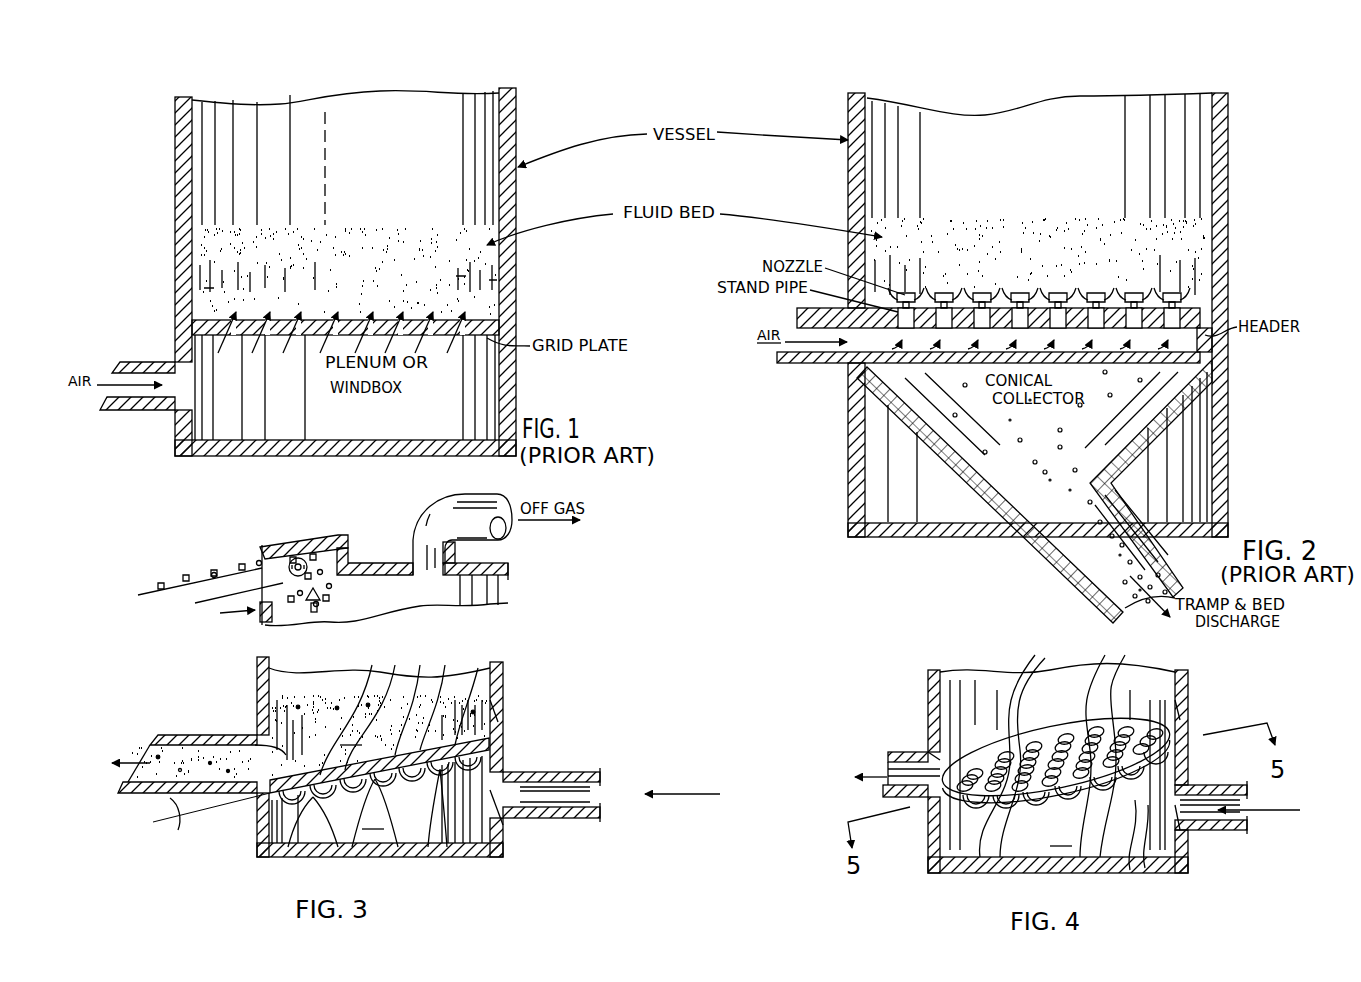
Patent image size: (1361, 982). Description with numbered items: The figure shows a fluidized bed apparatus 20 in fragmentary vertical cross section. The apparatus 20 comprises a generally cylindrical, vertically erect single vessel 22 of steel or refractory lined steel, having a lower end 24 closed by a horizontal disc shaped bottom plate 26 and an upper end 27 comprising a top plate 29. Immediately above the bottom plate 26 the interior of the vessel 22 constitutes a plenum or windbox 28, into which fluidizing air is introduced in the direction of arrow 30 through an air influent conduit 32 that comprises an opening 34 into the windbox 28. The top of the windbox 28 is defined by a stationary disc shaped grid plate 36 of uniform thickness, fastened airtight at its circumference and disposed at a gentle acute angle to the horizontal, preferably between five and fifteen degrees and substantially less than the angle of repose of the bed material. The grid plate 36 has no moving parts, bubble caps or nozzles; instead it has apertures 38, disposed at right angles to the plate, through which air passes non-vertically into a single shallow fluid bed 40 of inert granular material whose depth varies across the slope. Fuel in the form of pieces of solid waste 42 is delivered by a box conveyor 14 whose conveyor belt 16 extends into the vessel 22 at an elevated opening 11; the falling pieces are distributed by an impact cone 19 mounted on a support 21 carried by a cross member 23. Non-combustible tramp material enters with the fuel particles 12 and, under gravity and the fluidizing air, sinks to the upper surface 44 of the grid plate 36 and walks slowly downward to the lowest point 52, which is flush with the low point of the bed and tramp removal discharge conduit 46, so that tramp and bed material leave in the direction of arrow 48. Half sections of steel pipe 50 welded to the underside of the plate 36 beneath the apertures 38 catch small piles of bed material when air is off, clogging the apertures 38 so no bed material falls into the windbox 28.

In FIG. 3, the elevated opening 11 is at (262, 560).
In FIG. 3, the fuel particles 12 is at (243, 566).
In FIG. 3, the box conveyor 14 is at (308, 554).
In FIG. 3, the conveyor belt 16 is at (152, 592).
In FIG. 3, the impact cone 19 is at (322, 594).
In FIG. 3, the fluidized bed apparatus 20 is at (245, 652).
In FIG. 4, the fluidized bed apparatus 20 is at (977, 661).
In FIG. 3, the support 21 is at (330, 601).
In FIG. 3, the vessel 22 is at (503, 668).
In FIG. 4, the vessel 22 is at (1188, 683).
In FIG. 3, the cross member 23 is at (318, 610).
In FIG. 3, the lower end 24 is at (257, 838).
In FIG. 4, the lower end 24 is at (928, 855).
In FIG. 3, the bottom plate 26 is at (366, 857).
In FIG. 4, the bottom plate 26 is at (1042, 873).
In FIG. 3, the upper end 27 is at (508, 578).
In FIG. 3, the plenum or windbox 28 is at (377, 771).
In FIG. 4, the plenum or windbox 28 is at (1057, 765).
In FIG. 3, the top plate 29 is at (355, 571).
In FIG. 3, the arrow 30 is at (690, 793).
In FIG. 4, the arrow 30 is at (1250, 812).
In FIG. 3, the air influent conduit 32 is at (518, 778).
In FIG. 4, the air influent conduit 32 is at (1200, 786).
In FIG. 3, the opening 34 is at (502, 825).
In FIG. 4, the opening 34 is at (1148, 865).
In FIG. 3, the grid plate 36 is at (257, 798).
In FIG. 4, the grid plate 36 is at (1170, 748).
In FIG. 3, the apertures 38 is at (370, 676).
In FIG. 4, the apertures 38 is at (1035, 672).
In FIG. 3, the fluid bed 40 is at (379, 735).
In FIG. 3, the pieces of solid waste 42 is at (162, 584).
In FIG. 3, the upper surface 44 is at (498, 723).
In FIG. 4, the upper surface 44 is at (1180, 712).
In FIG. 3, the bed and tramp removal discharge conduit 46 is at (207, 733).
In FIG. 4, the bed and tramp removal discharge conduit 46 is at (908, 752).
In FIG. 3, the arrow 48 is at (138, 757).
In FIG. 4, the arrow 48 is at (880, 770).
In FIG. 3, the half sections of steel pipe 50 is at (312, 805).
In FIG. 4, the half sections of steel pipe 50 is at (985, 808).
In FIG. 3, the lowest point 52 is at (285, 745).
In FIG. 4, the lowest point 52 is at (932, 720).